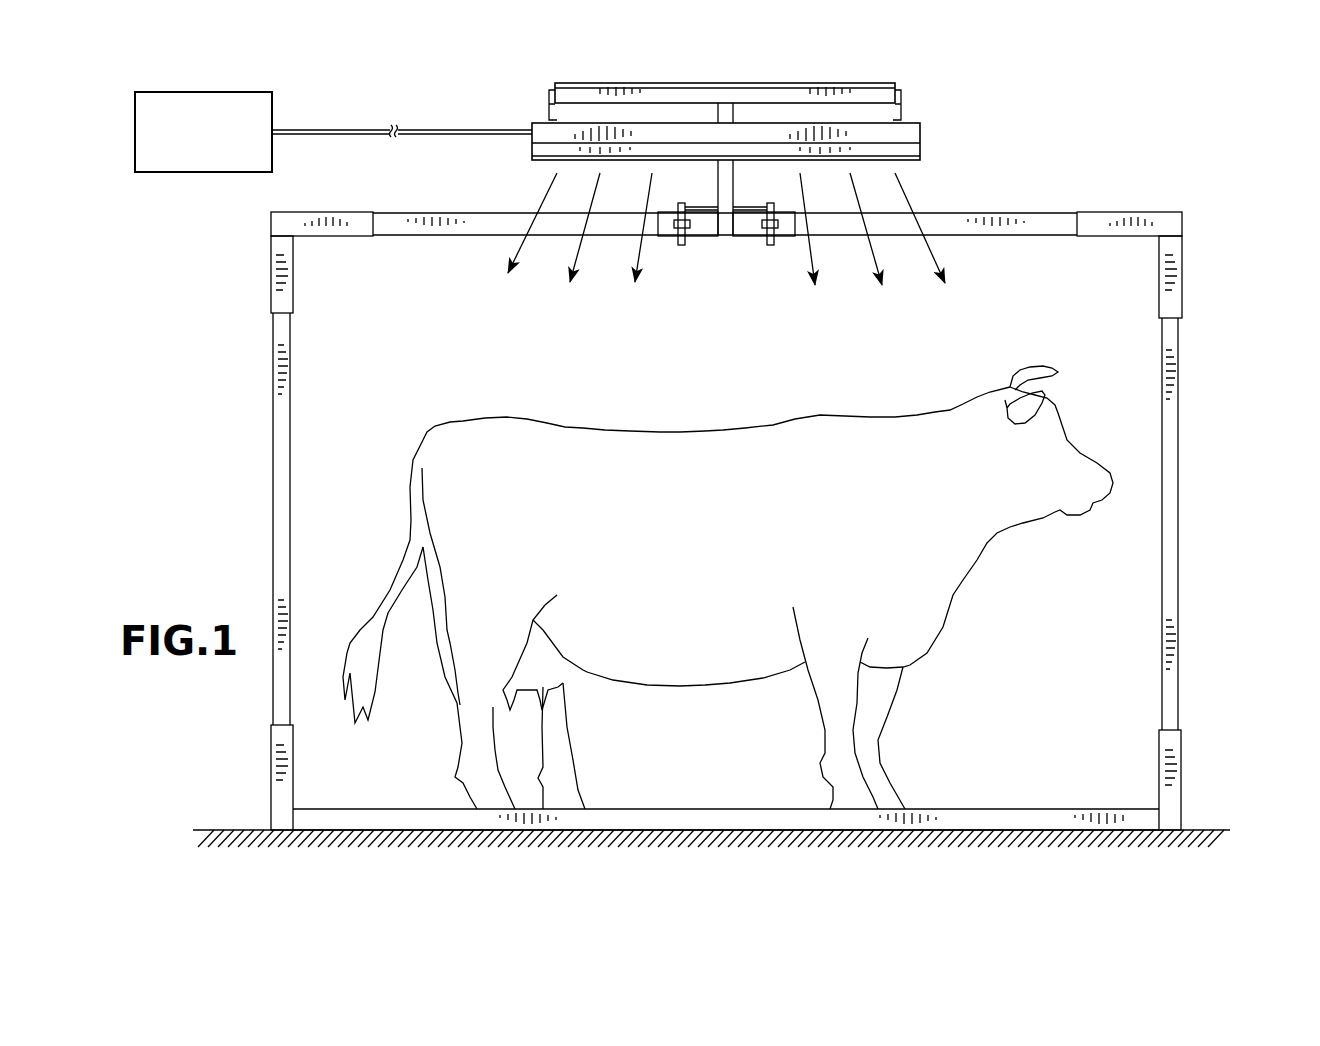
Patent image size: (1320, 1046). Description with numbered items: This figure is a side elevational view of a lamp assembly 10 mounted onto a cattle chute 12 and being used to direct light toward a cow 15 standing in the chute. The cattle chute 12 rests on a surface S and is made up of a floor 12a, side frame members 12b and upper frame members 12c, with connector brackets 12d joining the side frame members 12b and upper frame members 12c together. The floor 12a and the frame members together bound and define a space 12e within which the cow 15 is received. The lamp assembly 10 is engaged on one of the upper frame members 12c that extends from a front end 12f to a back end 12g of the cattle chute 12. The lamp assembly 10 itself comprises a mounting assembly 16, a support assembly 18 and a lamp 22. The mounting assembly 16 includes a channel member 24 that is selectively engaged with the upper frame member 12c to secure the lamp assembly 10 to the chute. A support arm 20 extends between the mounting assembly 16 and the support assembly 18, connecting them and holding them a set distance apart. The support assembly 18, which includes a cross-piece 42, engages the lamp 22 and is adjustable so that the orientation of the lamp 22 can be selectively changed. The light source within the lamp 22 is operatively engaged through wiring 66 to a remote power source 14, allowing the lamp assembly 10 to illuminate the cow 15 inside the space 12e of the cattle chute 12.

The lamp assembly 10 is at (946, 106).
The cattle chute 12 is at (1132, 196).
The floor 12a is at (1000, 815).
The side frame members 12b is at (278, 517).
The upper frame members 12c is at (493, 213).
The connector brackets 12d is at (271, 244).
The space 12e is at (336, 401).
The front end 12f is at (1197, 366).
The back end 12g is at (252, 367).
The remote power source 14 is at (200, 172).
The cow 15 is at (721, 426).
The mounting assembly 16 is at (700, 243).
The support assembly 18 is at (545, 94).
The support arm 20 is at (733, 183).
The lamp 22 is at (925, 140).
The channel member 24 is at (749, 229).
The cross-piece 42 is at (688, 99).
The wiring 66 is at (358, 128).
The surface S is at (232, 824).